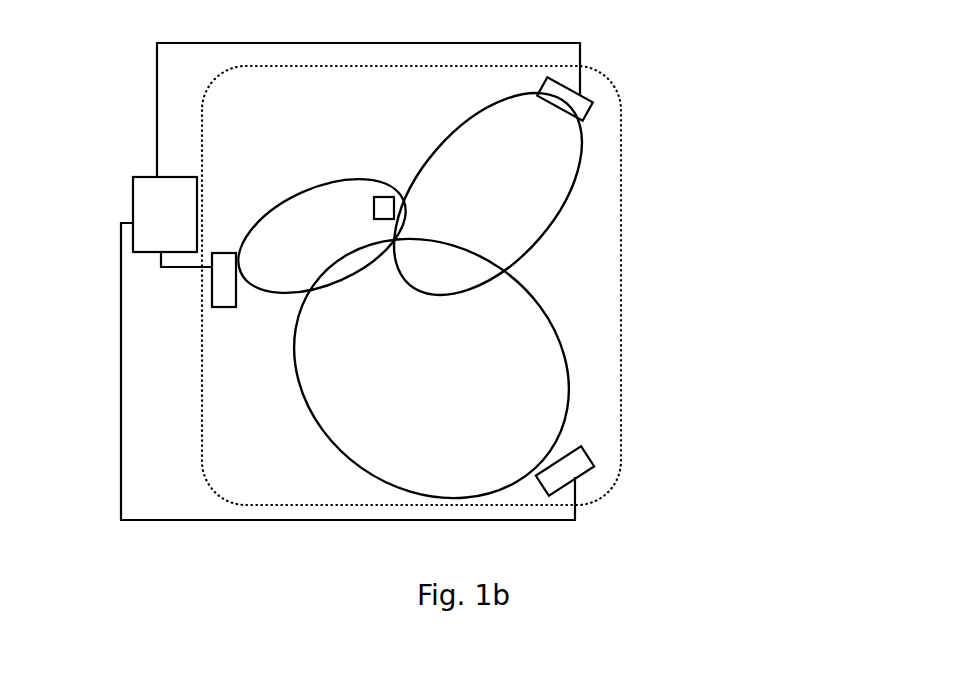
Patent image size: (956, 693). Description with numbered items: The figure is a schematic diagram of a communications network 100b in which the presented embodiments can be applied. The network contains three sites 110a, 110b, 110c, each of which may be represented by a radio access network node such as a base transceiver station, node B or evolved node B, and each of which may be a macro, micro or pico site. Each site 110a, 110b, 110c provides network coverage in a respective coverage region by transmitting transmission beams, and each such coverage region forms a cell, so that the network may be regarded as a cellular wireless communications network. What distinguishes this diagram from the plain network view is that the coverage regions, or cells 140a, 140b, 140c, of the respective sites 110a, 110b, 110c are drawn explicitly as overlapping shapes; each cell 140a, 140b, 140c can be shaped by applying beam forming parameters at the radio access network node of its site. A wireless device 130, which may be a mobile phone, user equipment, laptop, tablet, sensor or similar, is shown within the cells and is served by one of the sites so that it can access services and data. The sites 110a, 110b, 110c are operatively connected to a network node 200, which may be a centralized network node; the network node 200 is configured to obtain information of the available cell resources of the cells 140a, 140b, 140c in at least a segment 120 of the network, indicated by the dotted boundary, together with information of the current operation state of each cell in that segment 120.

The communications network 100b is at (728, 171).
The segment 120 is at (621, 285).
The network node 200 is at (132, 208).
The site 110a is at (212, 277).
The site 110b is at (593, 101).
The site 110c is at (594, 468).
The wireless device 130 is at (386, 197).
The cell 140a is at (278, 224).
The cell 140b is at (547, 240).
The cell 140c is at (405, 488).